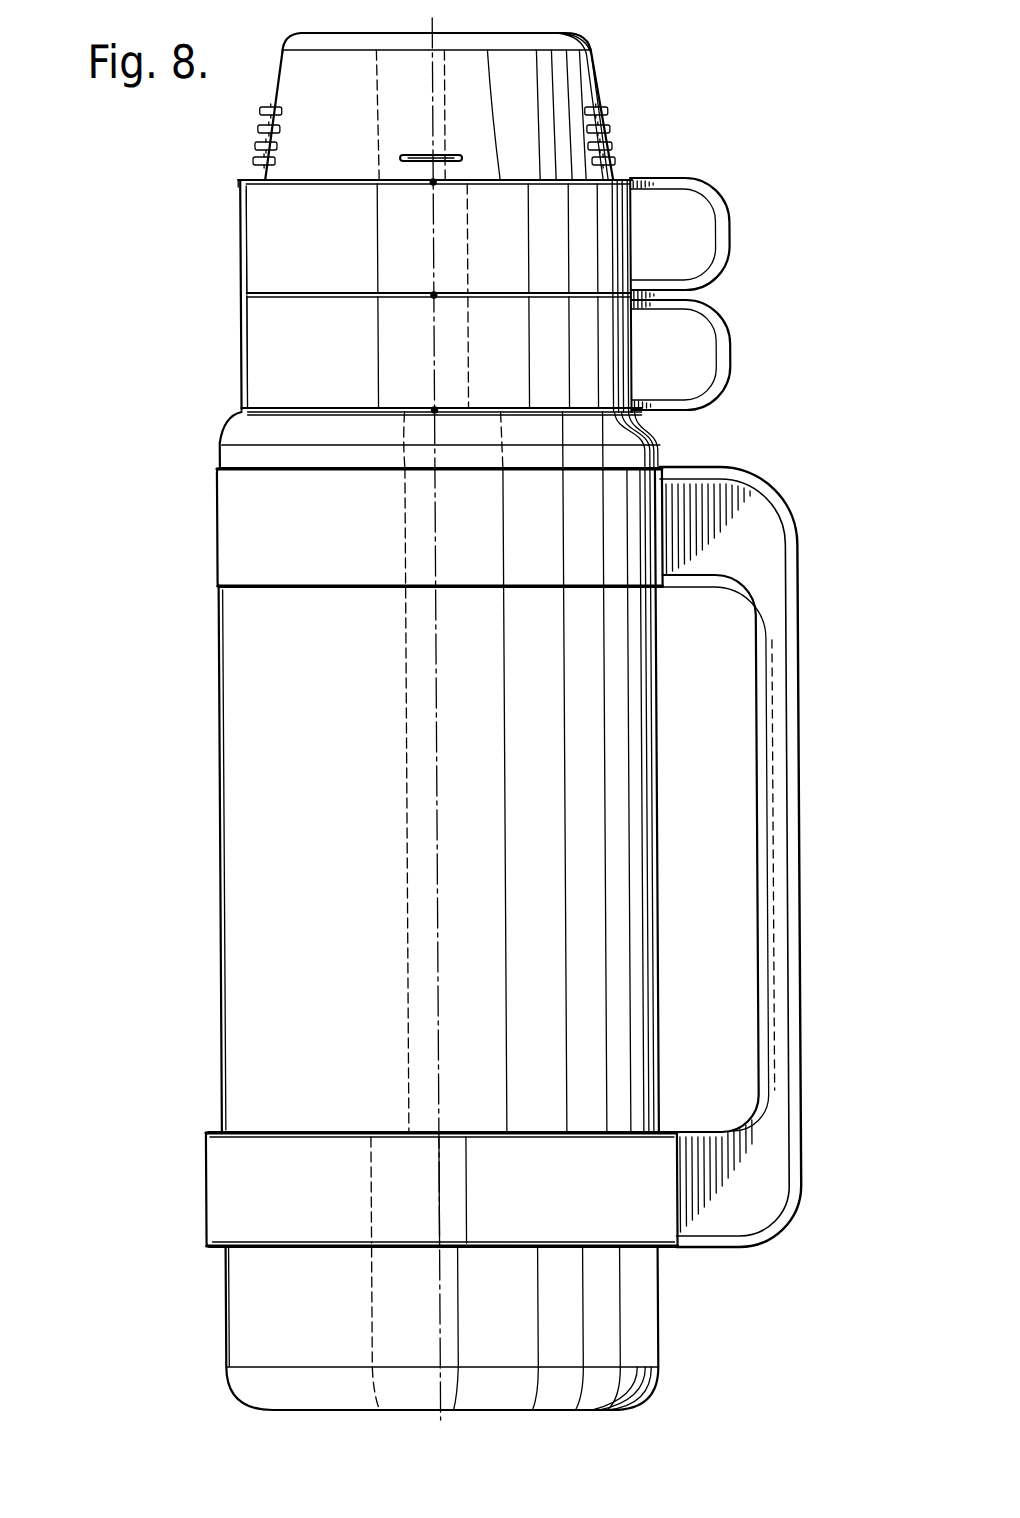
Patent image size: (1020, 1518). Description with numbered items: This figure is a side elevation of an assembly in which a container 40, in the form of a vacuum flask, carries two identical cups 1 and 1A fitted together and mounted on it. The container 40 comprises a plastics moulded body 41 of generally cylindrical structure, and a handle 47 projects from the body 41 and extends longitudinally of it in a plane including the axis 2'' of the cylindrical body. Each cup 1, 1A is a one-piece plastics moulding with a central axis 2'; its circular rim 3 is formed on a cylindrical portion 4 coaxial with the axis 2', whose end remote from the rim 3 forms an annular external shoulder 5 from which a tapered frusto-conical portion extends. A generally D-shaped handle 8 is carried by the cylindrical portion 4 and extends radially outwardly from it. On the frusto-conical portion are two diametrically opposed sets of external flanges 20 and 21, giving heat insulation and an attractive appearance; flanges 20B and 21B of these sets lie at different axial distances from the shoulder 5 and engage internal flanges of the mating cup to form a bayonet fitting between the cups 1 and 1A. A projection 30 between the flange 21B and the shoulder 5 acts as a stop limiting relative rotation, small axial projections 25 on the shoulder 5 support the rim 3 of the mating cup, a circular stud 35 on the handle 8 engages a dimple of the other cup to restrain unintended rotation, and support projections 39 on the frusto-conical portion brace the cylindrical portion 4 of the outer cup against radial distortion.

The cup 1 is at (236, 360).
The cup 1A is at (236, 232).
The central axis 2' is at (462, 115).
The axis of the cylindrical body 2'' is at (461, 719).
The circular rim 3 is at (243, 418).
The cylindrical portion 4 is at (262, 325).
The annular external shoulder 5 is at (350, 180).
The D-shaped handle 8 is at (718, 318).
The set of external flanges 20 is at (254, 106).
The external flange 20B is at (255, 147).
The set of external flanges 21 is at (615, 98).
The external flange 21B is at (614, 150).
The axially extending projections 25 is at (430, 298).
The radially outwardly extending projection 30 is at (622, 170).
The circular stud 35 is at (642, 178).
The support projections 39 is at (411, 155).
The container 40 is at (208, 722).
The plastics moulded body 41 is at (252, 1073).
The handle 47 is at (721, 1222).